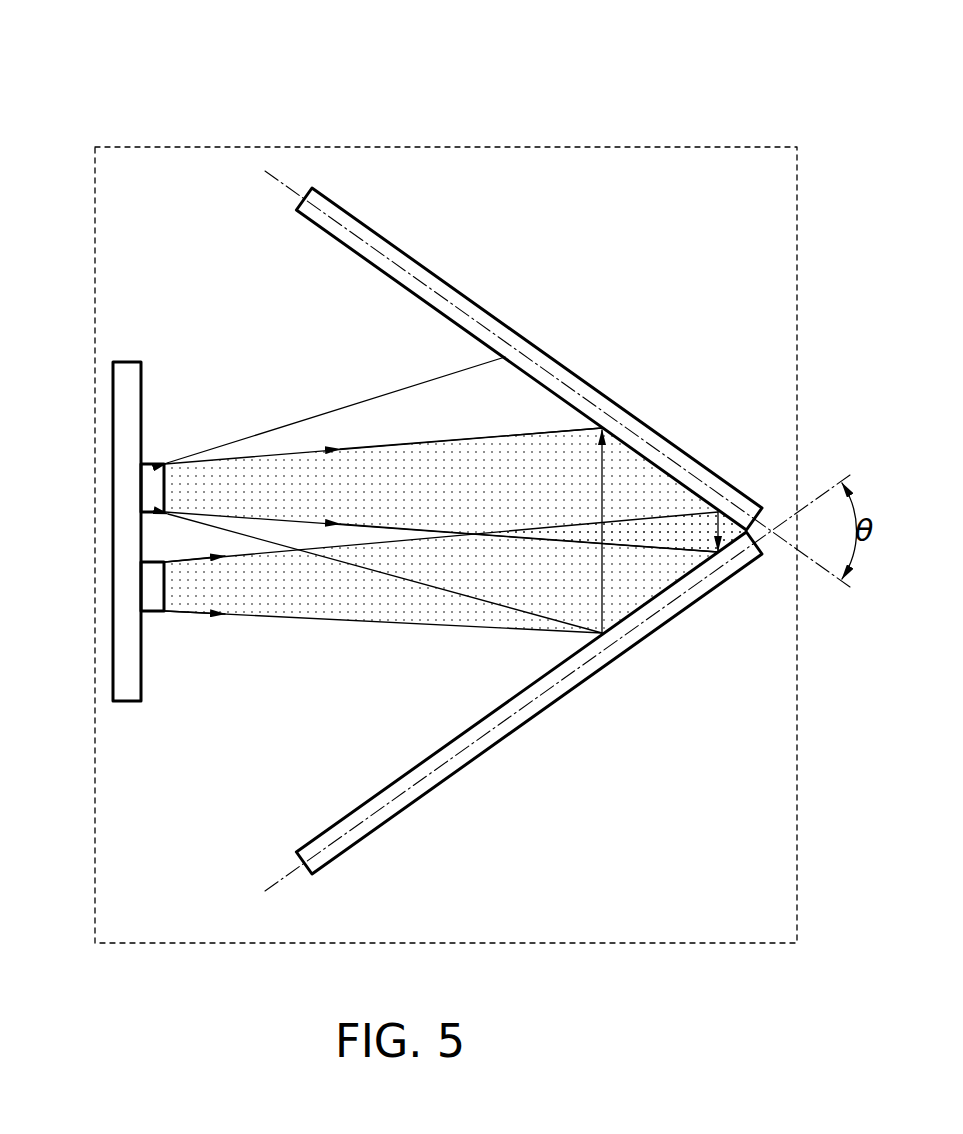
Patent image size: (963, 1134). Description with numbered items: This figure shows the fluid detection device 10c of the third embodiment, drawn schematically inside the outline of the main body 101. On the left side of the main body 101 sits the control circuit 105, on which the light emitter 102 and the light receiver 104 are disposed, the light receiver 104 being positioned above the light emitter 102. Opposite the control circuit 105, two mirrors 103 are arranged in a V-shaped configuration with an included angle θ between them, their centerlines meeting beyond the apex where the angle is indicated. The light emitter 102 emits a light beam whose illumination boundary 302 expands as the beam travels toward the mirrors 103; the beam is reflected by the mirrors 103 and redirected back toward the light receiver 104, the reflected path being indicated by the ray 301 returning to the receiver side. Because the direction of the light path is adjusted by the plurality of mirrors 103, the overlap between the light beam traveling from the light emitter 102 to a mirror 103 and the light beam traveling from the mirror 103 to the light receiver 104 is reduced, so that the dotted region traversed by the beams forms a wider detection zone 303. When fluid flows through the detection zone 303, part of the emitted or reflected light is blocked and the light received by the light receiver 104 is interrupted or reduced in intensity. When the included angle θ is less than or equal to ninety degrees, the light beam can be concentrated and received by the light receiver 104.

The fluid detection device 10c is at (78, 96).
The main body 101 is at (95, 240).
The light emitter 102 is at (153, 583).
The mirror 103 is at (540, 349).
The light receiver 104 is at (153, 480).
The control circuit 105 is at (130, 397).
The reflected light 301 is at (304, 420).
The illumination boundary 302 is at (378, 623).
The detection zone 303 is at (377, 457).